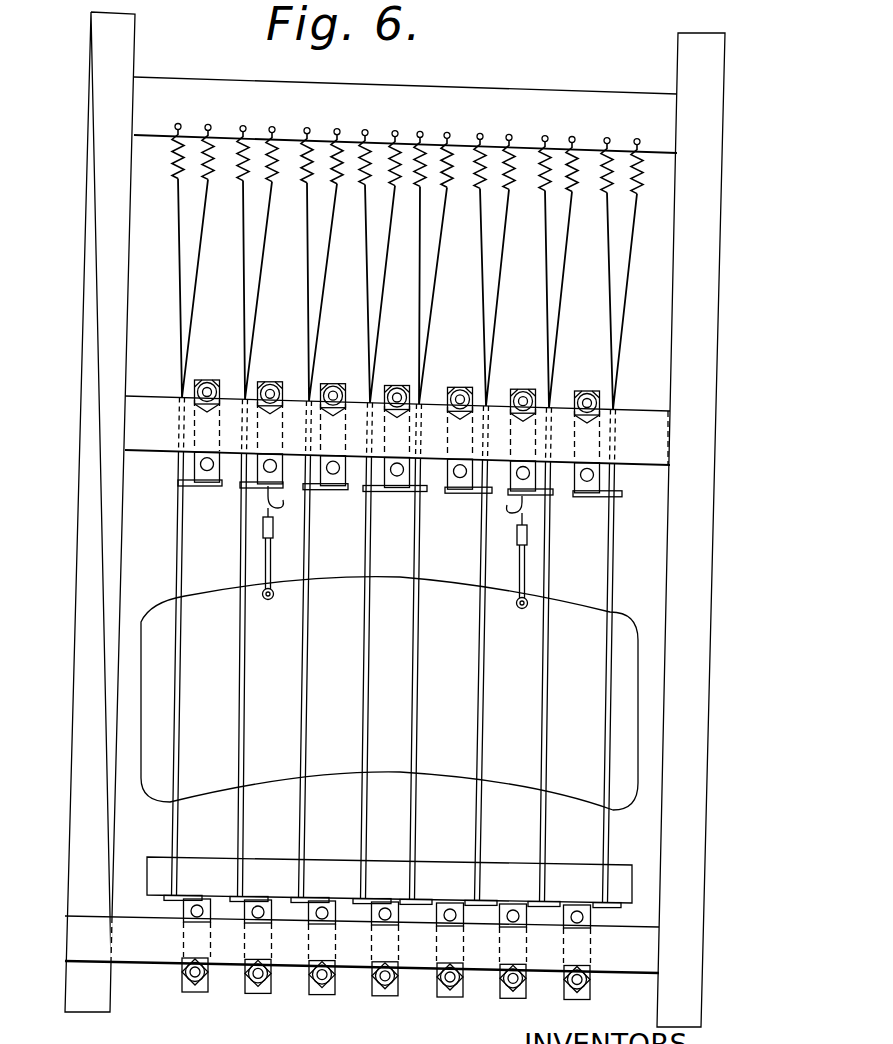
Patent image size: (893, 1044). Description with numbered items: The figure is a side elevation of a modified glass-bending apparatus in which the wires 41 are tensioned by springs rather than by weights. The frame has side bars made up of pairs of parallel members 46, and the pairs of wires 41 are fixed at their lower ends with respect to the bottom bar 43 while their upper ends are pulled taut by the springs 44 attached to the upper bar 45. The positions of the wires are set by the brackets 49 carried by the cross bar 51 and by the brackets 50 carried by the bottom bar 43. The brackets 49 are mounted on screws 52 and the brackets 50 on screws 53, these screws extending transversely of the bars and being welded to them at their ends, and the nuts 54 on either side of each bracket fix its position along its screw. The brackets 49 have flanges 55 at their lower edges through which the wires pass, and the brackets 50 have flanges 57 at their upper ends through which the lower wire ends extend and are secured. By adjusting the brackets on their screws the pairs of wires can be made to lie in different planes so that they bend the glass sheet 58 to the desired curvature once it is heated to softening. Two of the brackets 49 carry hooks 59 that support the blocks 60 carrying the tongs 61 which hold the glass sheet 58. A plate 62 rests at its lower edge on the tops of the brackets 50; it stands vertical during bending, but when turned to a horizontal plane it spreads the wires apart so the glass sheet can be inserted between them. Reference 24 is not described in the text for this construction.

The side post 24 is at (727, 74).
The pair of wires 41 is at (611, 738).
The bottom bar 43 is at (148, 943).
The springs 44 is at (338, 131).
The bar 45 is at (566, 100).
The parallel members 46 is at (80, 605).
The brackets 49 is at (577, 386).
The brackets 50 is at (329, 991).
The cross bar 51 is at (143, 427).
The screws 52 is at (597, 402).
The screws 53 is at (579, 983).
The nuts 54 is at (407, 383).
The flanges 55 is at (180, 481).
The flanges 57 is at (600, 905).
The glass sheet 58 is at (152, 713).
The hooks 59 is at (528, 504).
The blocks 60 is at (276, 531).
The tongs 61 is at (272, 563).
The plate 62 is at (618, 882).